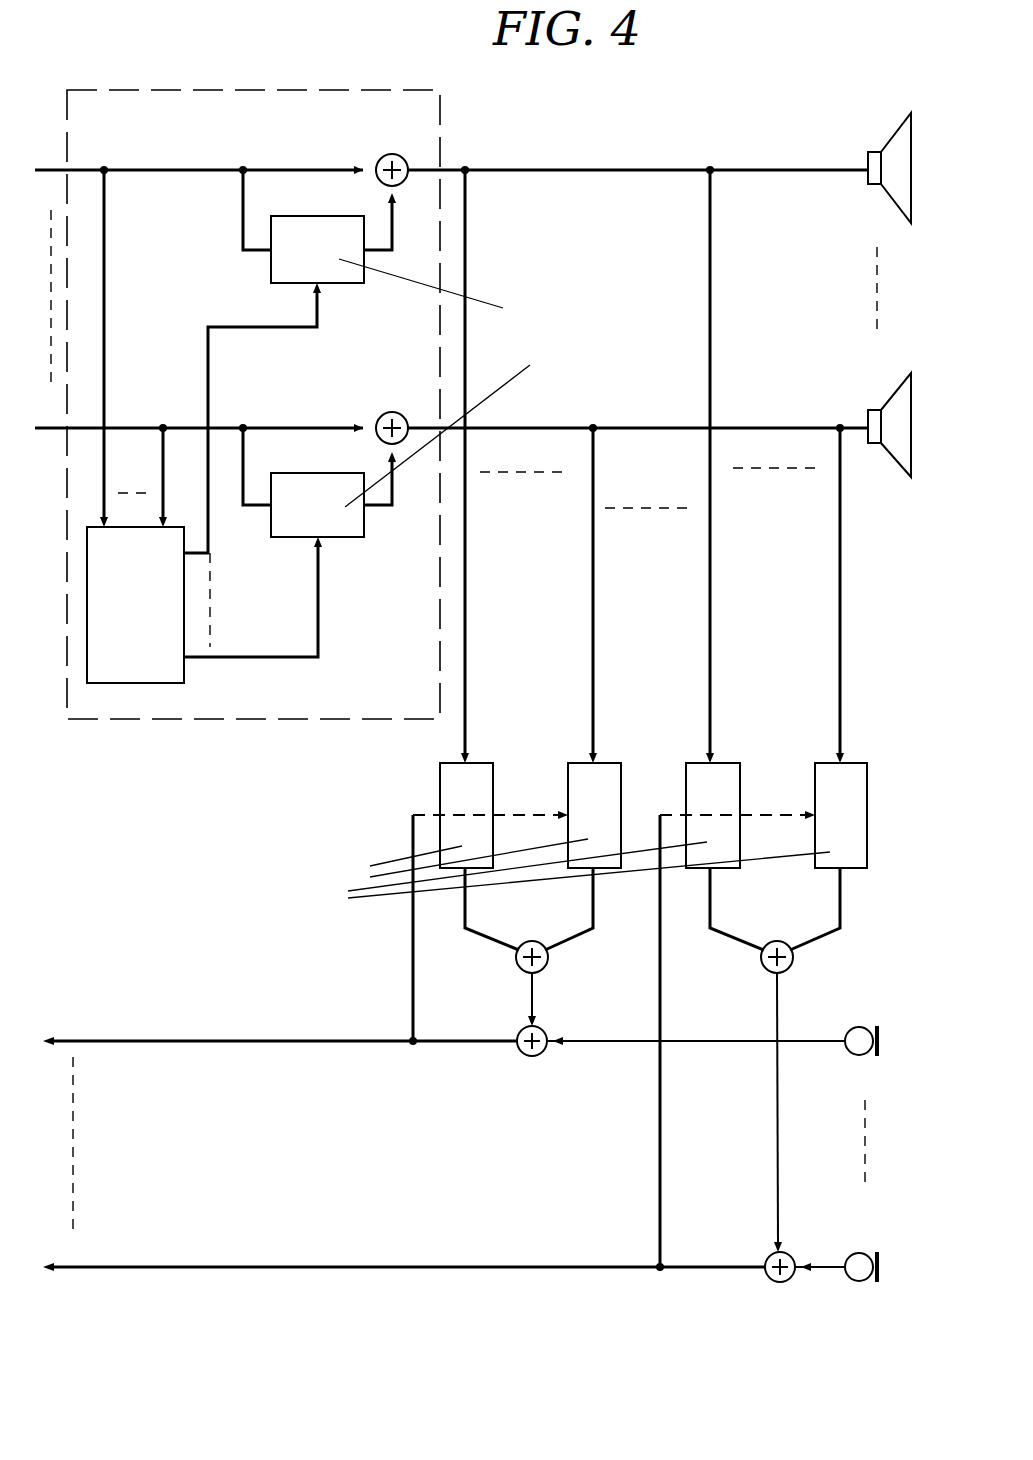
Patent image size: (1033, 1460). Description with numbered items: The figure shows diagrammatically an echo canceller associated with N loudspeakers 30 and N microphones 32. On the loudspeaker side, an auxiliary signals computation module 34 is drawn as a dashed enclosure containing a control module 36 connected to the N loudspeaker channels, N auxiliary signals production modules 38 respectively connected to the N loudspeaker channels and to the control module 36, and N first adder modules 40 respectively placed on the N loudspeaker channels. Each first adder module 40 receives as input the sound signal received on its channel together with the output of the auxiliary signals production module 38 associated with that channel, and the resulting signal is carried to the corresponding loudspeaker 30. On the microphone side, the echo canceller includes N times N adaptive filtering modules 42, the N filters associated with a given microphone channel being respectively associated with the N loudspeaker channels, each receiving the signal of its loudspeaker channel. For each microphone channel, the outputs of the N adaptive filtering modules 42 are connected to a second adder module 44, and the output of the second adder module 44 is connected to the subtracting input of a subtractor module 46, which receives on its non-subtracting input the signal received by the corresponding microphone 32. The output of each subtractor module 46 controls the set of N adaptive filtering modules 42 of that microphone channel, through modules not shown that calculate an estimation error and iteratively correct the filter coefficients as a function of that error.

The loudspeakers 30 is at (876, 488).
The microphones 32 is at (856, 1028).
The auxiliary signals computation module 34 is at (250, 100).
The control module 36 is at (173, 667).
The auxiliary signals production modules 38 is at (362, 563).
The first adder modules 40 is at (398, 158).
The adaptive filtering modules 42 is at (843, 785).
The second adder modules 44 is at (547, 960).
The subtractor modules 46 is at (533, 1057).